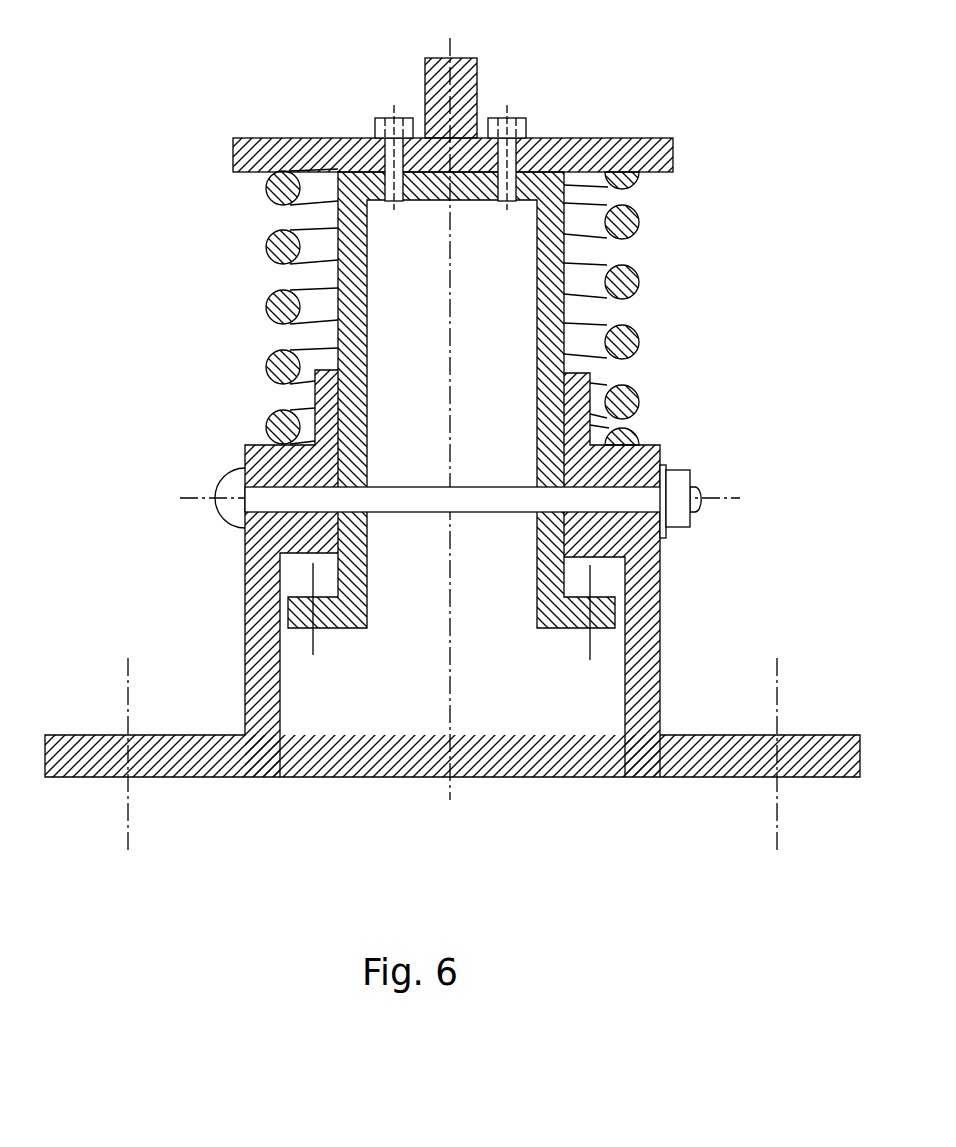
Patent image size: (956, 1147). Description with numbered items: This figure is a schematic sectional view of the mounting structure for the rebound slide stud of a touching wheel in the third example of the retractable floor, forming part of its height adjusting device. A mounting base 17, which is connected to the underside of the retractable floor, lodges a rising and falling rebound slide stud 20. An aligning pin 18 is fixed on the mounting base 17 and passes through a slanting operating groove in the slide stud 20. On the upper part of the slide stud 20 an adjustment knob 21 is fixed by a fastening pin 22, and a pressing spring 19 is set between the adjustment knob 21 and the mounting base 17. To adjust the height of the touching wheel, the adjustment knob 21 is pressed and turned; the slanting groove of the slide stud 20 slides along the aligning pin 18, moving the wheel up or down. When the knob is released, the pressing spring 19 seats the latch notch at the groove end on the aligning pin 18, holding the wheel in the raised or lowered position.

The mounting base 17 is at (168, 745).
The aligning pin 18 is at (283, 496).
The pressing spring 19 is at (267, 305).
The rising and falling rebound slide stud 20 is at (265, 248).
The adjustment knob 21 is at (260, 160).
The fastening pin 22 is at (365, 140).